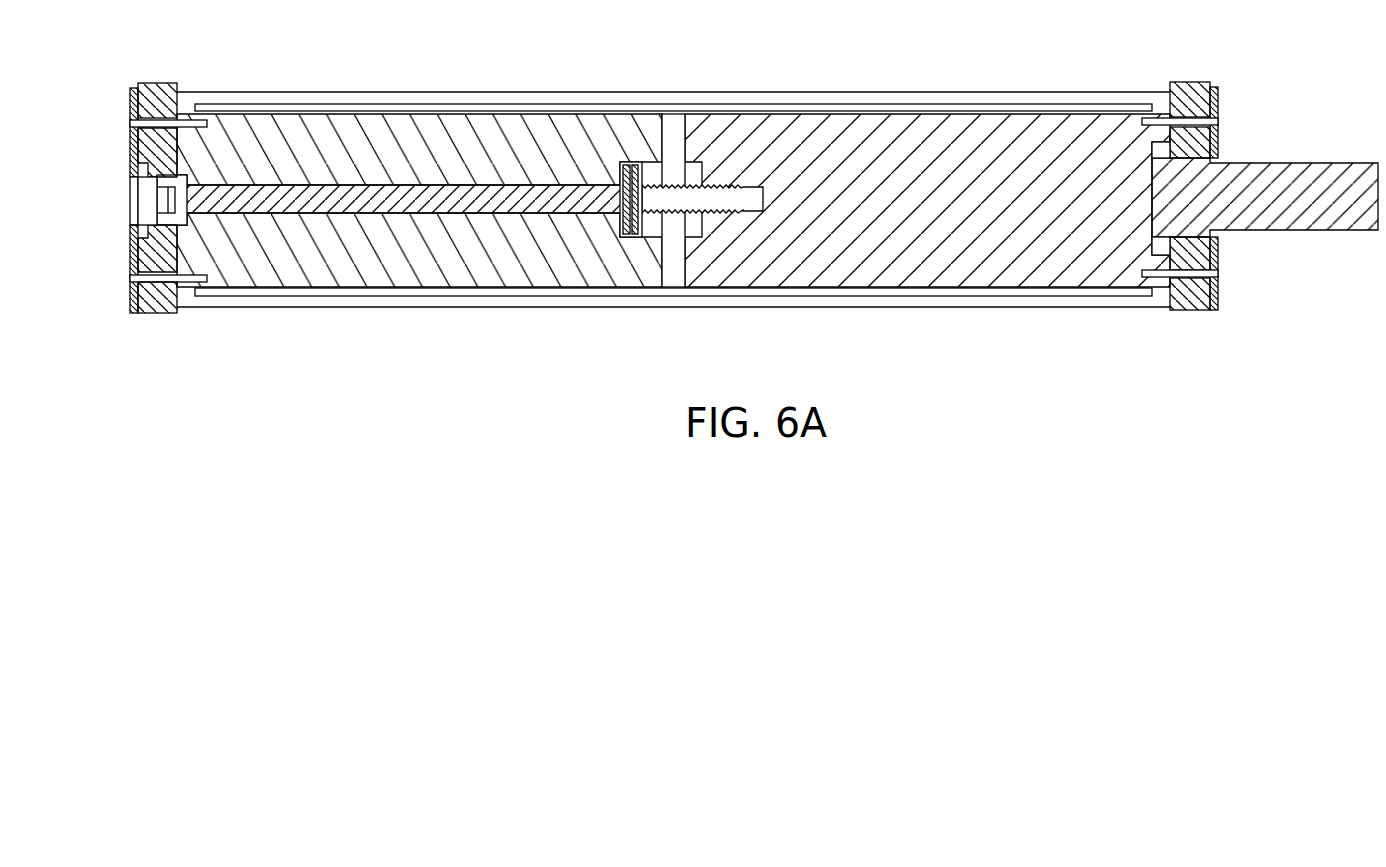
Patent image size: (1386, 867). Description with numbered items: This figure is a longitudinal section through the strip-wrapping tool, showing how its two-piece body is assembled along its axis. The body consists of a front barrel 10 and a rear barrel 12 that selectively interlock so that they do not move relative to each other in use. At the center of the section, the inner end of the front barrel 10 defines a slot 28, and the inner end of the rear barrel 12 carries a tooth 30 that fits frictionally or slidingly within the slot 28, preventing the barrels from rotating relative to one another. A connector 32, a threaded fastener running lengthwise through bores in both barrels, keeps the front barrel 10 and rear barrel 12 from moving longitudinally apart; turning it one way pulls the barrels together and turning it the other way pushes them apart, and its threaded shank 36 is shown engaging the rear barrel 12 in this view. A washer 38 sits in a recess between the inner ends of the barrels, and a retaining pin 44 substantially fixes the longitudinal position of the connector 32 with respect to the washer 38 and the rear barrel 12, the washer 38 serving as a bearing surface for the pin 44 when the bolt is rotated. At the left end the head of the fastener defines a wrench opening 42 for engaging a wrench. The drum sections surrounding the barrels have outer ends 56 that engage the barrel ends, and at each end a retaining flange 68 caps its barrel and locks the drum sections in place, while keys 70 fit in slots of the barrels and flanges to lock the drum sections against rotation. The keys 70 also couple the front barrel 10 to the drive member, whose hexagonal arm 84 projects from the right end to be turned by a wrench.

The front barrel 10 is at (913, 300).
The rear barrel 12 is at (435, 300).
The slot 28 is at (672, 120).
The tooth 30 is at (648, 268).
The connector 32 is at (352, 170).
The threaded stud 36 is at (715, 192).
The washer 38 is at (613, 238).
The wrench opening 42 is at (168, 197).
The retaining pin 44 is at (635, 163).
The outer ends 56 is at (470, 92).
The retaining flange 68 is at (131, 103).
The key 70 is at (168, 314).
The arm 84 is at (1326, 164).